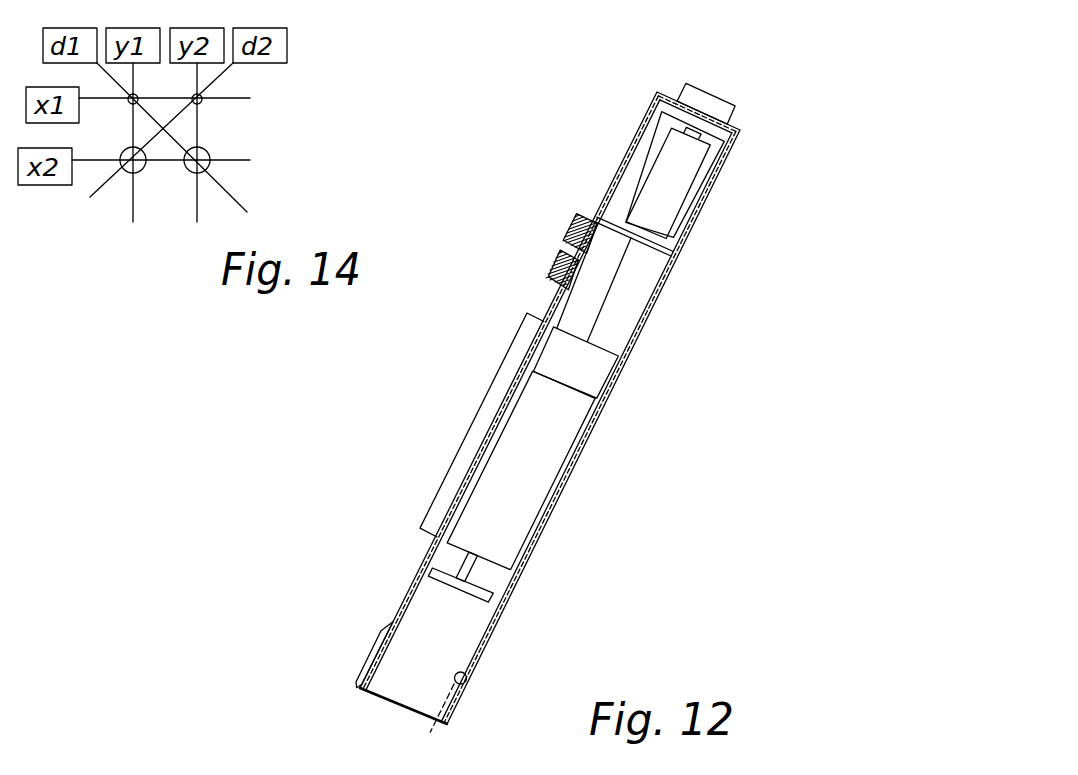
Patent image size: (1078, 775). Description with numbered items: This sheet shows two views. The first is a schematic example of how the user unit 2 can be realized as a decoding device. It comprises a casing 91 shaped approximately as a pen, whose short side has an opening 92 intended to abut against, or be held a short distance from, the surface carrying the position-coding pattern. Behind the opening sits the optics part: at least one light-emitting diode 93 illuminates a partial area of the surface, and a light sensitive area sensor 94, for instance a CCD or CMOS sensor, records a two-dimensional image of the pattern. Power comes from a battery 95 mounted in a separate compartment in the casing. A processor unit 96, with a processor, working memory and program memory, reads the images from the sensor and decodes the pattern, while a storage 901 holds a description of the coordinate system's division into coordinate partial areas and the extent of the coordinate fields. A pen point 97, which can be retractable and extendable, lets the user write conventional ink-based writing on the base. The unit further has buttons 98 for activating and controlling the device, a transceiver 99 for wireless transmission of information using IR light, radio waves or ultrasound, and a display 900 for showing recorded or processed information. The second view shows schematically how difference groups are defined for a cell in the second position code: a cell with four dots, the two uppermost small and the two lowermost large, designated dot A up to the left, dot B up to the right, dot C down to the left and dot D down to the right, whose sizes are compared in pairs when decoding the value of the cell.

In FIG. 12, the user unit 2 is at (762, 287).
In FIG. 12, the casing 91 is at (624, 371).
In FIG. 12, the opening 92 is at (397, 705).
In FIG. 12, the light-emitting diode 93 is at (463, 677).
In FIG. 12, the light sensitive area sensor 94 is at (488, 583).
In FIG. 12, the battery 95 is at (668, 188).
In FIG. 12, the processor unit 96 is at (532, 477).
In FIG. 12, the pen point 97 is at (360, 688).
In FIG. 12, the buttons 98 is at (567, 233).
In FIG. 12, the transceiver 99 is at (705, 97).
In FIG. 12, the display 900 is at (458, 473).
In FIG. 12, the storage 901 is at (560, 353).
In FIG. 14, the dot A is at (128, 110).
In FIG. 14, the dot B is at (201, 104).
In FIG. 14, the dot C is at (128, 171).
In FIG. 14, the dot D is at (205, 161).